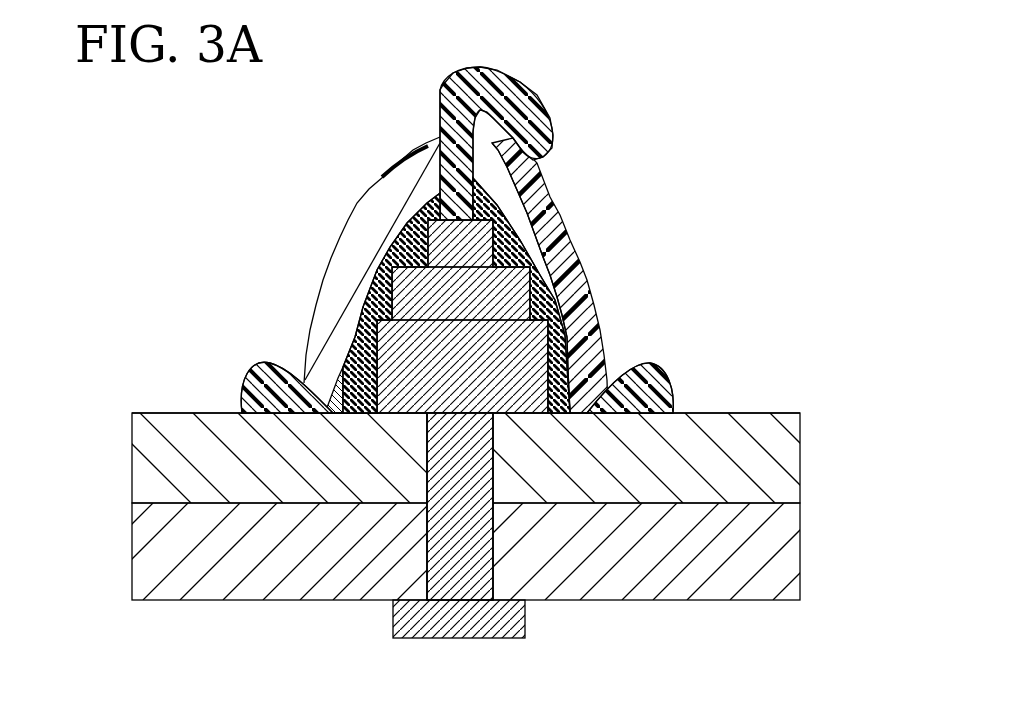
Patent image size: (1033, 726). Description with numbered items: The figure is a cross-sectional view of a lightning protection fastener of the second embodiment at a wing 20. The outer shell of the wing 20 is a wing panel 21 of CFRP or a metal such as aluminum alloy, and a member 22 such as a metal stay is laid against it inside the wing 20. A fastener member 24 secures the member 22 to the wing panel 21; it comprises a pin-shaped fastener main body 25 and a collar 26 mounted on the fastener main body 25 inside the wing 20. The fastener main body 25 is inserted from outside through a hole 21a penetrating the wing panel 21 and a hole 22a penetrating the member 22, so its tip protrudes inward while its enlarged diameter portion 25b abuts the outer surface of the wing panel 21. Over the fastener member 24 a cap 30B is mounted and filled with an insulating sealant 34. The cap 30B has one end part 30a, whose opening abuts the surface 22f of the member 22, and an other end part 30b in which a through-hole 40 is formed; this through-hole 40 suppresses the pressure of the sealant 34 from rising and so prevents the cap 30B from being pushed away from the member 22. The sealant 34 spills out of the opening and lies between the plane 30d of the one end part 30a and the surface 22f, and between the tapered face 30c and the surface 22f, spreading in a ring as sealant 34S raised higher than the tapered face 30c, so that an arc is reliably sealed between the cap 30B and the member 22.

The wing 20 is at (743, 610).
The wing panel 21 is at (792, 570).
The hole 21a is at (495, 560).
The member 22 is at (792, 468).
The hole 22a is at (495, 512).
The surface 22f is at (150, 413).
The fastener member 24 is at (808, 298).
The fastener main body 25 is at (493, 468).
The enlarged diameter portion 25b is at (462, 640).
The collar 26 is at (545, 363).
The one end part 30a is at (385, 335).
The other end part 30b is at (428, 135).
The cap 30B is at (383, 170).
The tapered face 30c is at (335, 382).
The plane 30d is at (340, 420).
The sealant 34 is at (547, 228).
The sealant 34S is at (250, 385).
The through-hole 40 is at (395, 201).